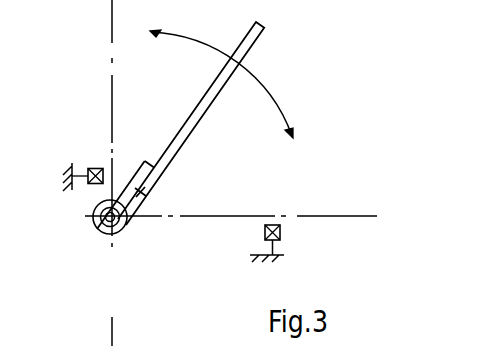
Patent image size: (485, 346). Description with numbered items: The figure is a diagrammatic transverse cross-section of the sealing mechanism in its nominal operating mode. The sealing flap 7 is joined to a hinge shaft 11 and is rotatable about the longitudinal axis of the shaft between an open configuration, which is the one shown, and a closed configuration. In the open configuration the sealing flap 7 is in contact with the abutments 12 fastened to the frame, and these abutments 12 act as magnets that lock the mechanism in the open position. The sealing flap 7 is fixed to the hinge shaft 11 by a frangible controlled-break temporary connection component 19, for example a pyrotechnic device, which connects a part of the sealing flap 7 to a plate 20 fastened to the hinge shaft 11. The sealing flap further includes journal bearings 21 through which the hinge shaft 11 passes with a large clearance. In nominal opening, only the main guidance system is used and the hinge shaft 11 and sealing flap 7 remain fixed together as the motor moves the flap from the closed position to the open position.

The sealing flap 7 is at (259, 28).
The hinge shaft 11 is at (104, 236).
The abutments 12 is at (281, 232).
The frangible controlled-break temporary connection component 19 is at (149, 190).
The plate 20 is at (145, 160).
The journal bearings 21 is at (125, 233).